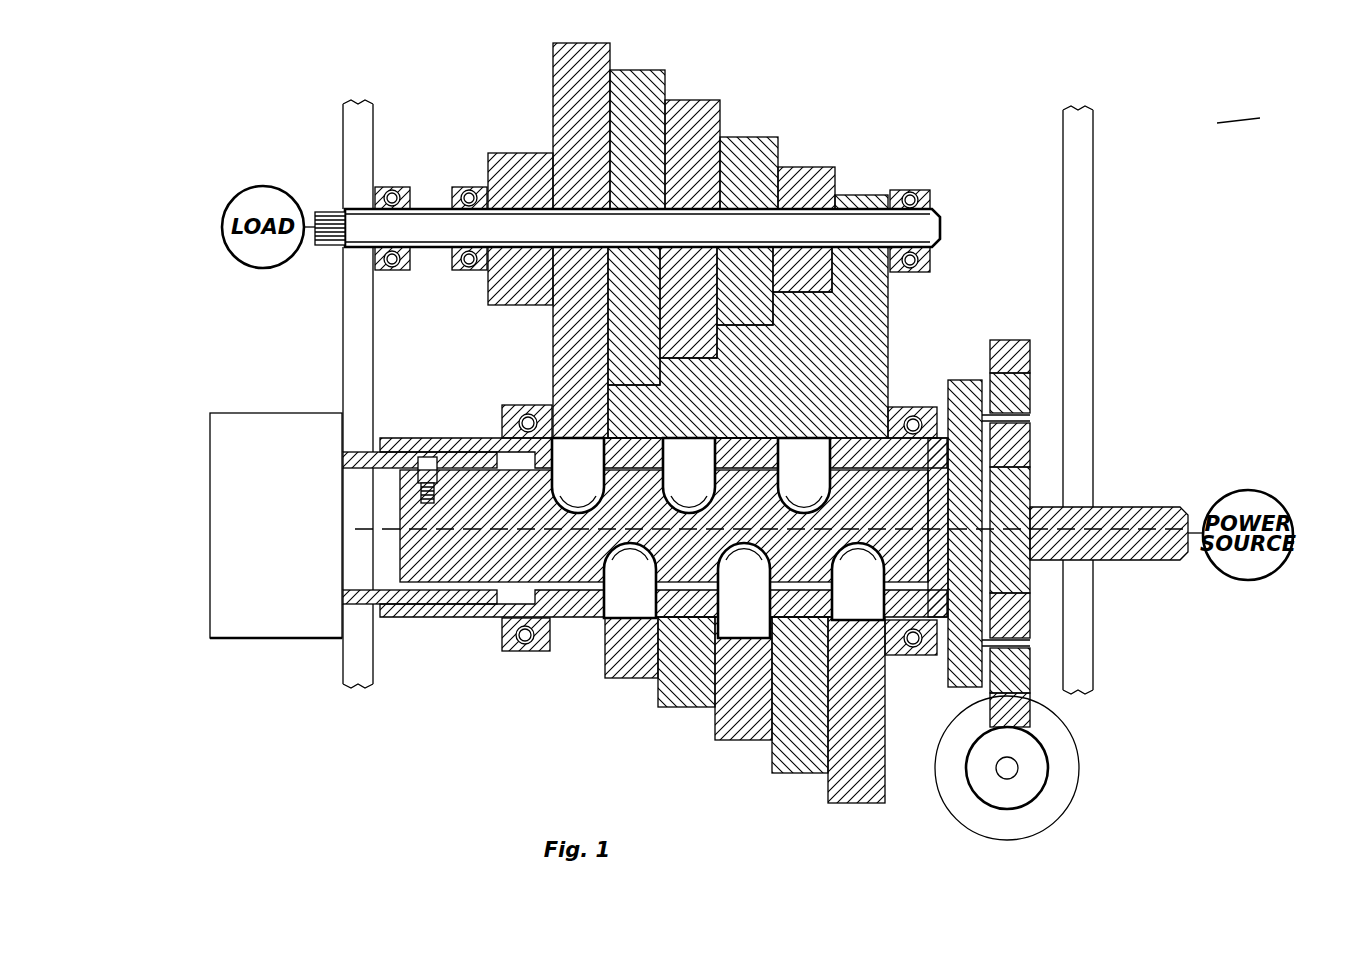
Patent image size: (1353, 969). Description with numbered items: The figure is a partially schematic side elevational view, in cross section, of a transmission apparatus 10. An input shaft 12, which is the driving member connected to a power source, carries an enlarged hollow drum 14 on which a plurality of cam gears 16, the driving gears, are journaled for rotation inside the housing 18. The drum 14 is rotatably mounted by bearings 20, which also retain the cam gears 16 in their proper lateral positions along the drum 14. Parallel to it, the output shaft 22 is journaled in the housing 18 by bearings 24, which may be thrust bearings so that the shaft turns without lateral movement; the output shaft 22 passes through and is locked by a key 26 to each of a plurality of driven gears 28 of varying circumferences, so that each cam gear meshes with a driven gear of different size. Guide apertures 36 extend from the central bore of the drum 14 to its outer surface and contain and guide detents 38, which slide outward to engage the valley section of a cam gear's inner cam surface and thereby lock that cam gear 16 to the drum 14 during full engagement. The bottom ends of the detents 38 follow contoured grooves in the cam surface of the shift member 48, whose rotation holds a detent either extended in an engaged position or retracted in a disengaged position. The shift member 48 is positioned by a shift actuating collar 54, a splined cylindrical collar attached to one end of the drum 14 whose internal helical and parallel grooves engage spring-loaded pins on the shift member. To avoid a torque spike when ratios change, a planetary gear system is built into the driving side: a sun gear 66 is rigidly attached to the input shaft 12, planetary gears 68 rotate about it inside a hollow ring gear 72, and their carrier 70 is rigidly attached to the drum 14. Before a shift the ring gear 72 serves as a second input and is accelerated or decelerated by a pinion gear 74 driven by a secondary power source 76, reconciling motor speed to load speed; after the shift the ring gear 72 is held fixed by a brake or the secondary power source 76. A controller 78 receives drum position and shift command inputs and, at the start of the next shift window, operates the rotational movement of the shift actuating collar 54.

The transmission apparatus 10 is at (1217, 123).
The input shaft 12 is at (1160, 522).
The drum 14 is at (944, 438).
The cam gears 16 is at (830, 805).
The housing 18 is at (353, 150).
The bearings 20 is at (515, 405).
The output shaft 22 is at (380, 232).
The bearings 24 is at (465, 187).
The key 26 is at (858, 205).
The driven gears 28 is at (800, 167).
The guide apertures 36 is at (618, 468).
The detents 38 is at (570, 488).
The shift member 48 is at (458, 565).
The shift actuating collar 54 is at (385, 605).
The sun gear 66 is at (1012, 505).
The planetary gears 68 is at (1010, 450).
The carrier 70 is at (967, 380).
The ring gear 72 is at (1012, 397).
The pinion gear 74 is at (1030, 785).
The secondary power source 76 is at (1065, 768).
The controller 78 is at (255, 545).